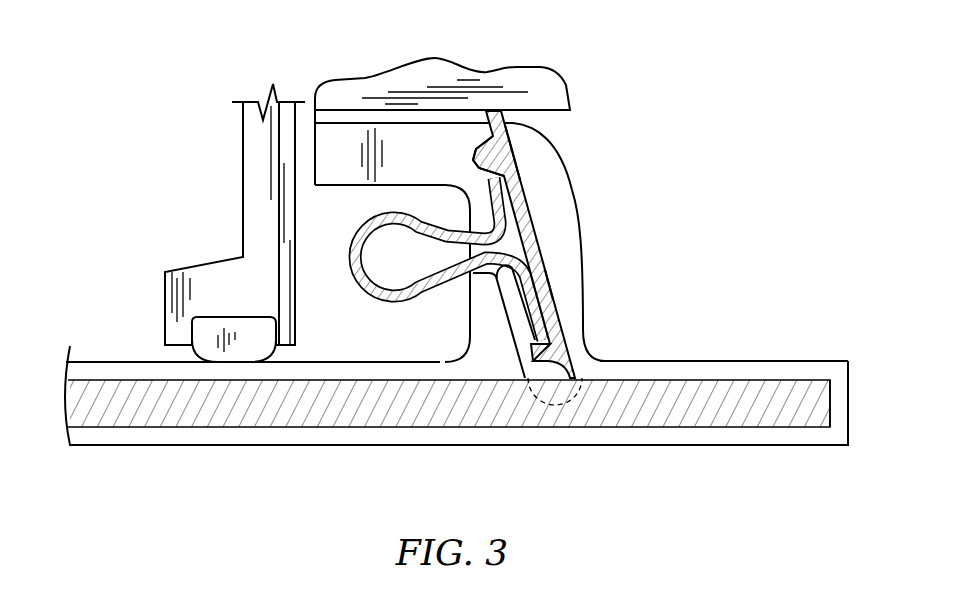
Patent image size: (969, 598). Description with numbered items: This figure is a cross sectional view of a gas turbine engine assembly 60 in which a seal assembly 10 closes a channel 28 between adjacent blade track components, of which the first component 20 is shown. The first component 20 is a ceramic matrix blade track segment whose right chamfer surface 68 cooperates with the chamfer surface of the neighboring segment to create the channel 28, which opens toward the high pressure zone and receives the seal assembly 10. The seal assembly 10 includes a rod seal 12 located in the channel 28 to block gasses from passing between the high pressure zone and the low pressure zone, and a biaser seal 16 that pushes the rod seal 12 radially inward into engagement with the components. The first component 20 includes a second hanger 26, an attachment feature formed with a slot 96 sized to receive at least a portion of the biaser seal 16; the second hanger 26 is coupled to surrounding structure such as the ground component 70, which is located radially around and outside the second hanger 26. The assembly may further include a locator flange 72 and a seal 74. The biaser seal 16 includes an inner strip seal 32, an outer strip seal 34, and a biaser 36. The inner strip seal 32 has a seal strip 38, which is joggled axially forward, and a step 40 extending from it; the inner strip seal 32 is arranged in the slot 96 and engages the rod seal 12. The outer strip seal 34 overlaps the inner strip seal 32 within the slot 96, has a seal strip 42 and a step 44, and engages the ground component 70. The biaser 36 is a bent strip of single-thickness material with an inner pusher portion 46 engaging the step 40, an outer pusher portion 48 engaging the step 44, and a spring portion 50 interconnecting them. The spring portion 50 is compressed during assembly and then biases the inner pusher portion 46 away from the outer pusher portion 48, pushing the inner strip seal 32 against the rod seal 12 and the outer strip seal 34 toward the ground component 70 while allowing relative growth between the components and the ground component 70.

The seal assembly 10 is at (678, 118).
The rod seal 12 is at (95, 371).
The biaser seal 16 is at (397, 196).
The first component 20 is at (772, 356).
The second hanger 26 is at (340, 189).
The channel 28 is at (146, 358).
The inner strip seal 32 is at (566, 326).
The outer strip seal 34 is at (518, 140).
The biaser 36 is at (351, 261).
The seal strip 38 is at (560, 292).
The step 40 is at (532, 378).
The seal strip 42 is at (518, 166).
The step 44 is at (479, 127).
The inner pusher portion 46 is at (501, 306).
The outer pusher portion 48 is at (481, 181).
The spring portion 50 is at (420, 306).
The gas turbine engine assembly 60 is at (123, 79).
The right chamfer surface 68 is at (821, 370).
The ground component 70 is at (511, 71).
The locator flange 72 is at (239, 134).
The seal 74 is at (206, 312).
The slot 96 is at (546, 236).